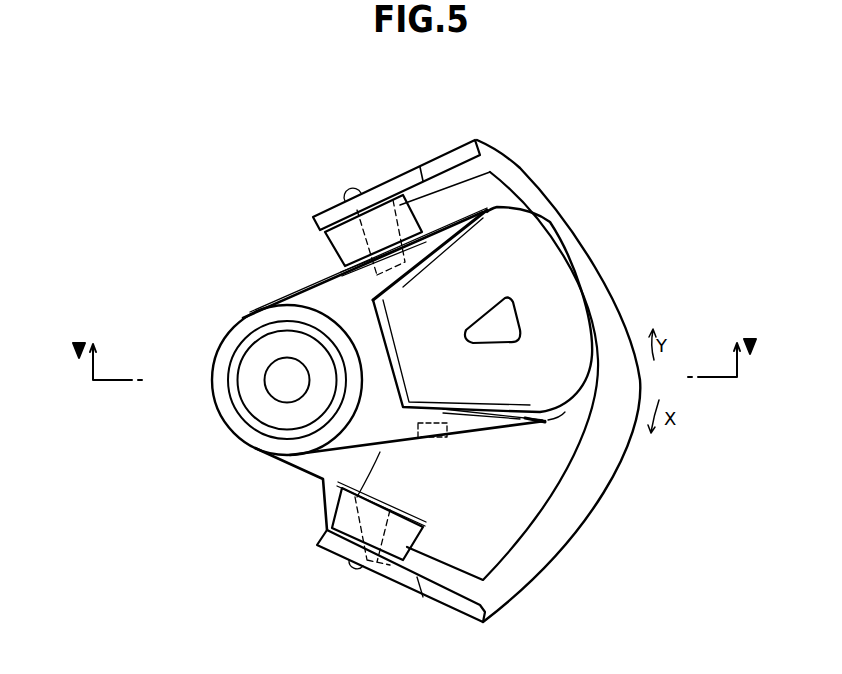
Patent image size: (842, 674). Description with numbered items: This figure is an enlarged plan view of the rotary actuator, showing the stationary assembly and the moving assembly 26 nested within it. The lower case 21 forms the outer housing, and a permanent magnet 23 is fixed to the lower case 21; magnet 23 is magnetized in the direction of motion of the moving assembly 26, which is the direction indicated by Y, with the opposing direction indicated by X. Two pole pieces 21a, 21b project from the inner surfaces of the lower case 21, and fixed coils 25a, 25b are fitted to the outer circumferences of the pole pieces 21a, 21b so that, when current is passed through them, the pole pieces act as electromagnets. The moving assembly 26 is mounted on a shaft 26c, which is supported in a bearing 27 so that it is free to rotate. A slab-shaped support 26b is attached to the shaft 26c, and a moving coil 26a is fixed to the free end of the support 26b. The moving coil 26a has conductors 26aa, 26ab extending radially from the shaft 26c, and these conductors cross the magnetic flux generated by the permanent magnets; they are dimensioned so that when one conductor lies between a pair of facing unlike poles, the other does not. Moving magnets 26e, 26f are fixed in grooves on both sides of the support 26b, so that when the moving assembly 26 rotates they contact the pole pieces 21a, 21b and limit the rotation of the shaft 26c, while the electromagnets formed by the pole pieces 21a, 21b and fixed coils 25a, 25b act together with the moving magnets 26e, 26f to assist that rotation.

The lower case 21 is at (617, 447).
The pole piece 21a is at (370, 537).
The pole piece 21b is at (345, 205).
The permanent magnet 23 is at (547, 480).
The fixed coil 25a is at (398, 547).
The fixed coil 25b is at (390, 210).
The moving assembly 26 is at (345, 455).
The moving coil 26a is at (543, 237).
The conductor 26aa is at (503, 423).
The conductor 26ab is at (440, 217).
The support 26b is at (327, 307).
The shaft 26c is at (250, 370).
The moving magnet 26e is at (433, 437).
The moving magnet 26f is at (440, 177).
The bearing 27 is at (282, 368).